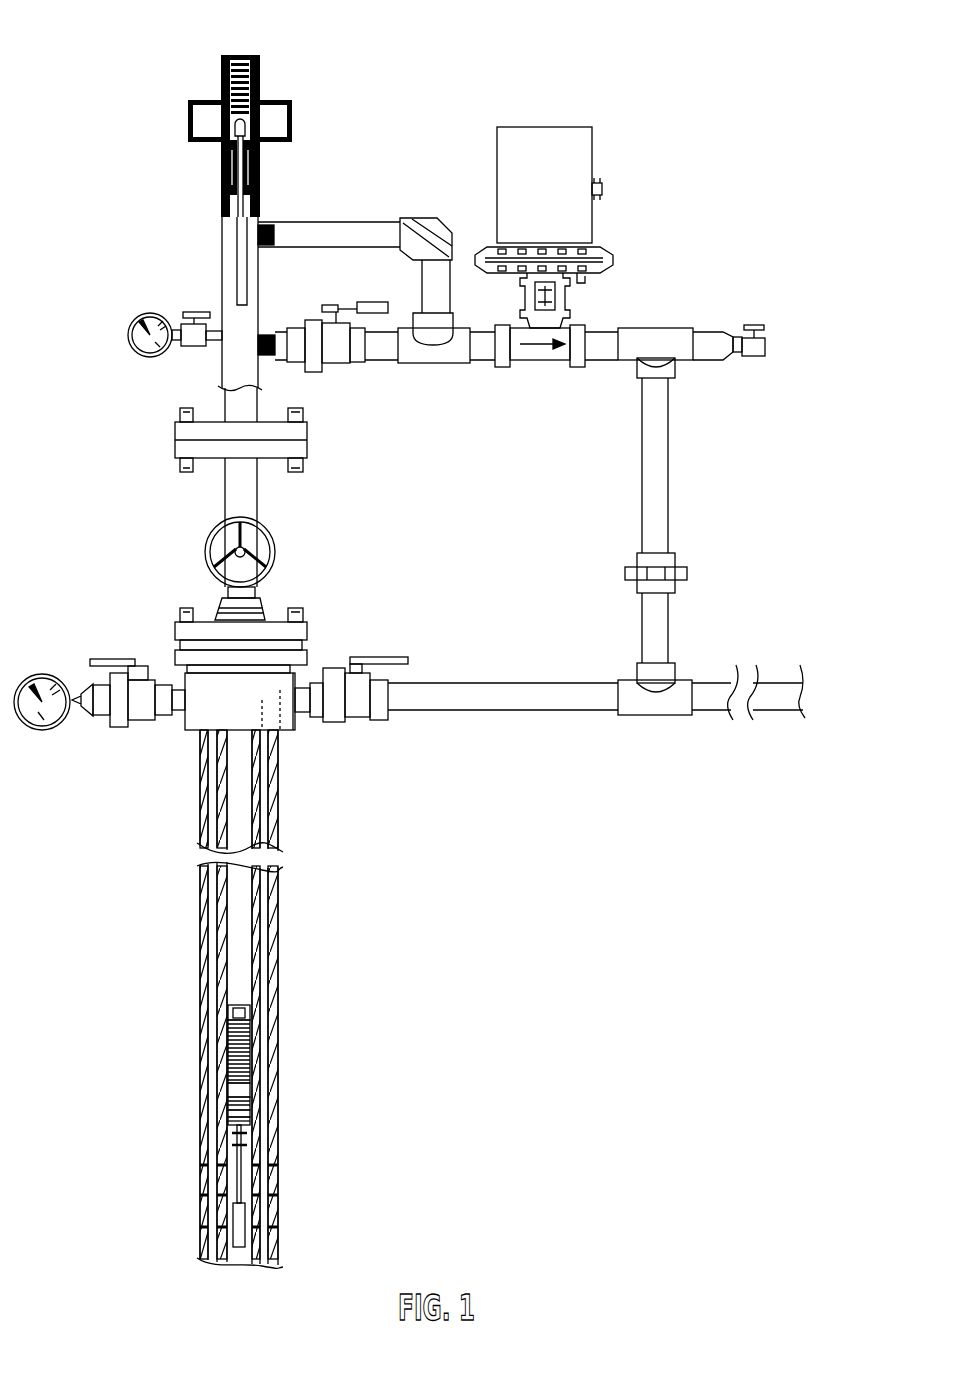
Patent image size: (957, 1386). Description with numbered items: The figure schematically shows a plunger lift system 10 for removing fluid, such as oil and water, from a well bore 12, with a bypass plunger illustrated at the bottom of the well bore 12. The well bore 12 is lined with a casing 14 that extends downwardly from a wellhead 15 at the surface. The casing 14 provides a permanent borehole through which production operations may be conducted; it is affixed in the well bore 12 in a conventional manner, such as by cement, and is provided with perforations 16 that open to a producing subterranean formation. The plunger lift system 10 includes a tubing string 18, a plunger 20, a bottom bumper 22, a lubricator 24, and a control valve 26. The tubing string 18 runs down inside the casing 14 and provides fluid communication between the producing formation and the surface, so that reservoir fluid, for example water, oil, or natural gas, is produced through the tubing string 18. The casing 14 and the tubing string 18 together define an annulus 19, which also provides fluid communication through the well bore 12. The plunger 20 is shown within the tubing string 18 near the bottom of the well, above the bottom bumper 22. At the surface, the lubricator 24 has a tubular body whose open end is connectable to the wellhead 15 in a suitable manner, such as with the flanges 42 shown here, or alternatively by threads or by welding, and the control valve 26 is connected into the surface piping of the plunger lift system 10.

The plunger lift system 10 is at (127, 24).
The well bore 12 is at (200, 792).
The casing 14 is at (280, 887).
The wellhead 15 is at (308, 632).
The perforations 16 is at (200, 1165).
The tubing string 18 is at (218, 938).
The annulus 19 is at (266, 932).
The plunger 20 is at (250, 1050).
The bottom bumper 22 is at (240, 1165).
The lubricator 24 is at (264, 84).
The control valve 26 is at (614, 265).
The flanges 42 is at (308, 432).